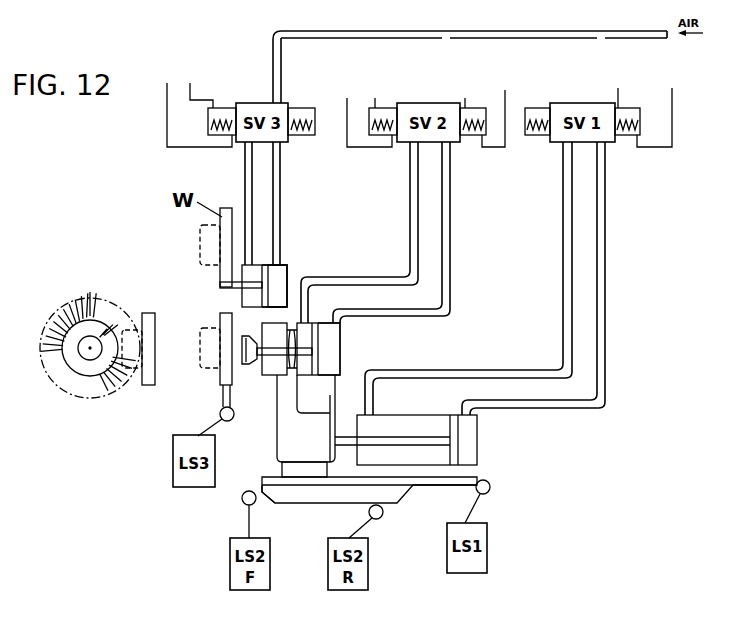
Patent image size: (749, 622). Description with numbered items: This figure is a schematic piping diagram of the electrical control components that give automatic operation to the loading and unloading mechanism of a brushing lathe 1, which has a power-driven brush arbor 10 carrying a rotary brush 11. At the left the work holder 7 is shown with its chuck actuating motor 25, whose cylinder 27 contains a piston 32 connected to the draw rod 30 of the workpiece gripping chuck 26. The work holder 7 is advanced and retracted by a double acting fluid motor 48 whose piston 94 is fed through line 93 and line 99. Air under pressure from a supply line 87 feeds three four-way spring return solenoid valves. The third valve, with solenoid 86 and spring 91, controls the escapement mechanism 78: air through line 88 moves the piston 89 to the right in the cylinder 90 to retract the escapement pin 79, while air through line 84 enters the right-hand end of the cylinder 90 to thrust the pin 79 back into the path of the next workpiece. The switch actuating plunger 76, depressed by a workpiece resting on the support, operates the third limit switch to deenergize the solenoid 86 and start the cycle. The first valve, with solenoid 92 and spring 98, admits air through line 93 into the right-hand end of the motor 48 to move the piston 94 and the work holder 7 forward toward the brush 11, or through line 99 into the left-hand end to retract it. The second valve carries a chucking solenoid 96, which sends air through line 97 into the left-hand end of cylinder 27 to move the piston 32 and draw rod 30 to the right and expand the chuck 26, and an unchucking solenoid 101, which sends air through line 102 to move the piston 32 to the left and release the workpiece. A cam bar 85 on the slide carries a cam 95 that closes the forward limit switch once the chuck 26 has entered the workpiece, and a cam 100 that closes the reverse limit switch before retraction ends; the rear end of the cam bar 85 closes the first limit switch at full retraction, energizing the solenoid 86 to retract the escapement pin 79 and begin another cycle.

The brushing lathe 1 is at (88, 365).
The work holder 7 is at (314, 348).
The brush arbor 10 is at (88, 356).
The rotary brush 11 is at (50, 313).
The chuck actuating motor 25 is at (346, 335).
The workpiece gripping chuck 26 is at (258, 366).
The cylinder 27 is at (340, 358).
The draw rod 30 is at (277, 378).
The piston 32 is at (312, 372).
The double acting fluid motor 48 is at (432, 423).
The switch actuating plunger 76 is at (221, 398).
The escapement mechanism 78 is at (292, 263).
The escapement pin 79 is at (219, 285).
The line 84 is at (280, 172).
The cam bar 85 is at (478, 479).
The solenoid 86 is at (227, 116).
The supply line 87 is at (362, 26).
The line 88 is at (248, 160).
The piston 89 is at (265, 266).
The cylinder 90 is at (288, 278).
The spring 91 is at (300, 118).
The solenoid 92 is at (628, 122).
The line 93 is at (602, 307).
The piston 94 is at (455, 427).
The cam 95 is at (272, 500).
The chucking solenoid 96 is at (383, 122).
The line 97 is at (412, 210).
The spring 98 is at (534, 118).
The line 99 is at (568, 273).
The cam 100 is at (412, 499).
The unchucking solenoid 101 is at (476, 125).
The line 102 is at (448, 245).